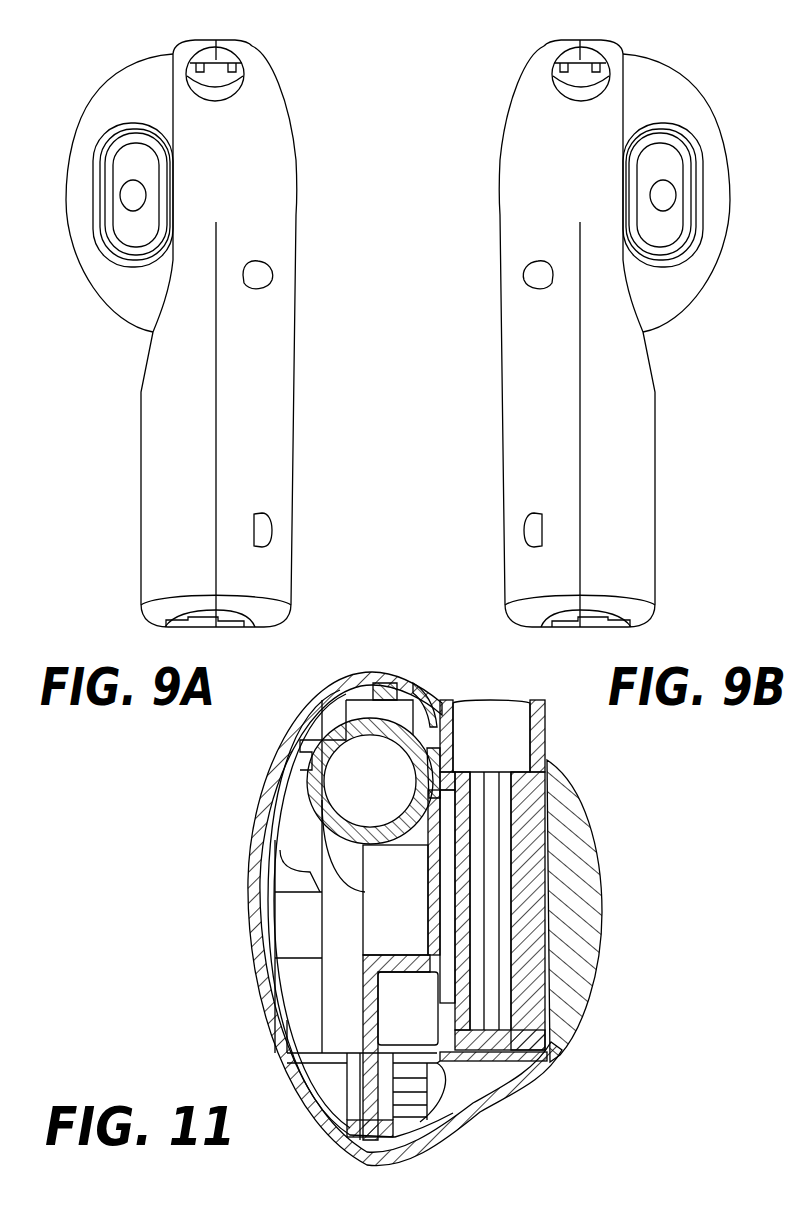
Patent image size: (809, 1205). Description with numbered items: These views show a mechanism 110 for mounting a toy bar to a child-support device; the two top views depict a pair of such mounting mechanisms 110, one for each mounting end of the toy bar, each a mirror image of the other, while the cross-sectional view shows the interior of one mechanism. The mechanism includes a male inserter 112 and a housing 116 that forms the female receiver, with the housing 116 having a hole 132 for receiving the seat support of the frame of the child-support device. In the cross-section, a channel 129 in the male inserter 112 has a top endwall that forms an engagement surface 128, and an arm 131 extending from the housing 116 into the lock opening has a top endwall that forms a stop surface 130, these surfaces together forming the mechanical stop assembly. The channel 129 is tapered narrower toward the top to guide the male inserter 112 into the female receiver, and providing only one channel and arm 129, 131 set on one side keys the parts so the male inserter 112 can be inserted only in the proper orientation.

In FIG. 9A, the mounting mechanism 110 is at (318, 311).
In FIG. 9B, the mounting mechanism 110 is at (662, 60).
In FIG. 11, the mounting mechanism 110 is at (605, 817).
In FIG. 9A, the male inserter 112 is at (111, 248).
In FIG. 9B, the male inserter 112 is at (682, 132).
In FIG. 11, the male inserter 112 is at (550, 707).
In FIG. 9A, the housing 116 is at (298, 161).
In FIG. 9B, the housing 116 is at (653, 360).
In FIG. 11, the housing 116 is at (546, 1100).
In FIG. 9B, the hole 132 is at (567, 63).
In FIG. 11, the hole 132 is at (383, 765).
In FIG. 11, the stop surface 130 is at (460, 800).
In FIG. 11, the engagement surface 128 is at (465, 800).
In FIG. 11, the channel 129 is at (455, 836).
In FIG. 11, the arm 131 is at (452, 904).